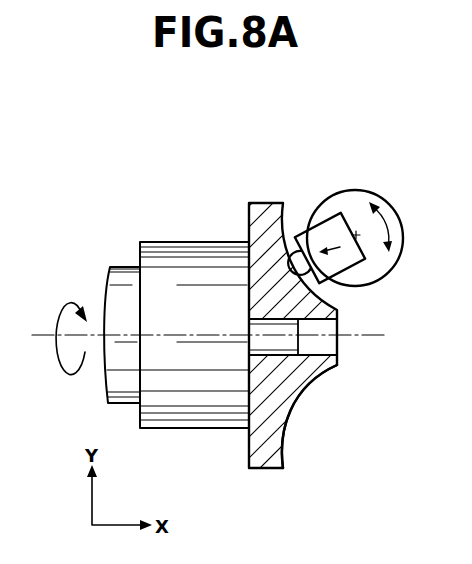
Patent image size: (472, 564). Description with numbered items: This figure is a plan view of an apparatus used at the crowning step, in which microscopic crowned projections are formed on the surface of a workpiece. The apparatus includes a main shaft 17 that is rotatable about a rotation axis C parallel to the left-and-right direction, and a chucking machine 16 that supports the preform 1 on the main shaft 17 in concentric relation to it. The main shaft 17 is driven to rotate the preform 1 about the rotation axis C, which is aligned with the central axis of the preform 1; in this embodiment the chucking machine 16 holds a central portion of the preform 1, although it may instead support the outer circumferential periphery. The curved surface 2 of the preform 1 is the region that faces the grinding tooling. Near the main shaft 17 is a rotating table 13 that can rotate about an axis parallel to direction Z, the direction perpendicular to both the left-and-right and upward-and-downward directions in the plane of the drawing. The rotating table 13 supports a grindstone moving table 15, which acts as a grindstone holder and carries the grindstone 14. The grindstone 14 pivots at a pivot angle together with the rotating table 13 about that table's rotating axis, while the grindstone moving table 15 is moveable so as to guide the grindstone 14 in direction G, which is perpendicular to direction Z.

The preform 1 is at (283, 441).
The curved machined surface 2 is at (296, 391).
The rotating table 13 is at (360, 203).
The grindstone 14 is at (304, 247).
The grindstone moving table 15 is at (333, 230).
The chucking machine 16 is at (182, 255).
The main shaft 17 is at (122, 280).
The direction Z is at (357, 235).
The direction G is at (375, 281).
The rotation axis C is at (353, 338).